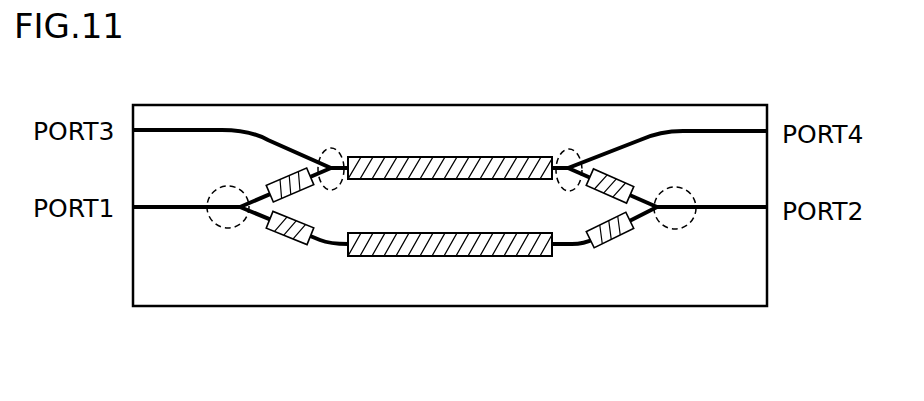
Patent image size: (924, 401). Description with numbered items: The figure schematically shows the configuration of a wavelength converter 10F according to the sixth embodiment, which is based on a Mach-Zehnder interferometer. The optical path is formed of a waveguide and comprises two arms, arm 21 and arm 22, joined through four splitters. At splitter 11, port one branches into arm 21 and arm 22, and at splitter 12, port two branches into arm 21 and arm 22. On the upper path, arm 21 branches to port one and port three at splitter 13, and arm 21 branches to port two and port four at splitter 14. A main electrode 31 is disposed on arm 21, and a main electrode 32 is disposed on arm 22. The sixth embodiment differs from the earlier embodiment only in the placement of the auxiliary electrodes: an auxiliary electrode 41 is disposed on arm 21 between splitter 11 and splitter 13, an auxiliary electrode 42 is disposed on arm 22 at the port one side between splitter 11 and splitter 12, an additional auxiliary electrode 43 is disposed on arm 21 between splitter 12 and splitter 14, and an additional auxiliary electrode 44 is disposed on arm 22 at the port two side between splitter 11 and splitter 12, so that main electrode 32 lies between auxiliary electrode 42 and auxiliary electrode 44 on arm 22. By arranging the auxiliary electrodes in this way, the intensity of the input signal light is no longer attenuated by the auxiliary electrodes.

The wavelength converter 10F is at (173, 105).
The splitter 11 is at (231, 229).
The splitter 12 is at (670, 230).
The splitter 13 is at (331, 148).
The splitter 14 is at (569, 149).
The arm 21 is at (258, 203).
The arm 22 is at (257, 212).
The main electrode 31 is at (470, 165).
The main electrode 32 is at (476, 248).
The auxiliary electrode 41 is at (285, 178).
The auxiliary electrode 42 is at (300, 244).
The auxiliary electrode 43 is at (617, 178).
The auxiliary electrode 44 is at (615, 240).